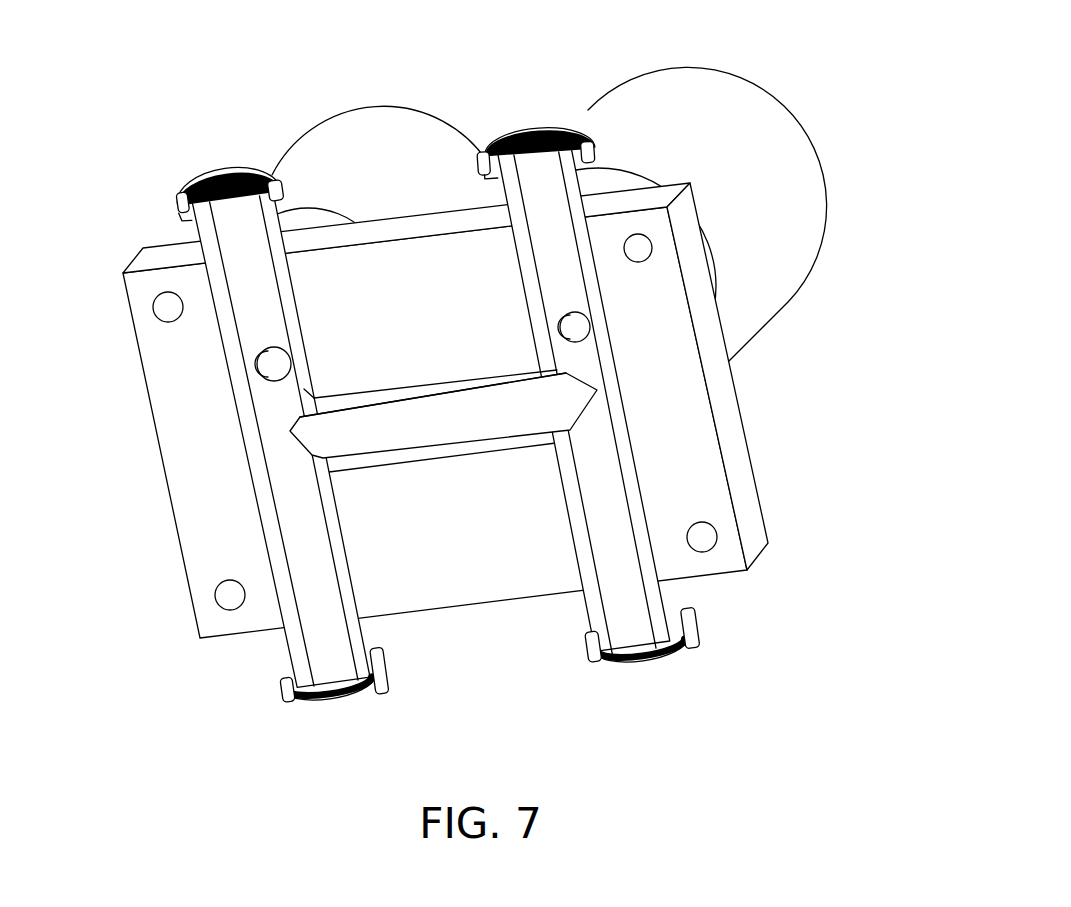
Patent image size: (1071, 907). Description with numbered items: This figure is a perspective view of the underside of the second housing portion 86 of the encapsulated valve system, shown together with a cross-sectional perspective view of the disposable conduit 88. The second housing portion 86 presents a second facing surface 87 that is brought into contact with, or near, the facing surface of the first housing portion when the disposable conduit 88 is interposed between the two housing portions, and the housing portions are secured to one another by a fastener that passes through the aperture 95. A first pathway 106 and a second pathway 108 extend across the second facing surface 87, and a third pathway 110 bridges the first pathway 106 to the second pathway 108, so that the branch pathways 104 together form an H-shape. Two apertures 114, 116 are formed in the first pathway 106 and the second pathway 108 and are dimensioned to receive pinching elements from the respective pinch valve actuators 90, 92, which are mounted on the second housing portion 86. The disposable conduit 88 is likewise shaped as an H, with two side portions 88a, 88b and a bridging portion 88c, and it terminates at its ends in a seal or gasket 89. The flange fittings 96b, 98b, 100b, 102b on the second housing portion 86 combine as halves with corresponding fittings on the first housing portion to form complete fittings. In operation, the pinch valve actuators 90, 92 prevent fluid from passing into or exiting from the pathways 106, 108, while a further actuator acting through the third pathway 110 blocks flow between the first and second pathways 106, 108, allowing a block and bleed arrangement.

The second housing portion 86 is at (469, 410).
The second facing surface 87 is at (700, 432).
The disposable conduit 88 is at (461, 418).
The side portion 88a is at (641, 402).
The side portion 88b is at (254, 439).
The bridging portion 88c is at (442, 452).
The seal or gasket 89 is at (176, 186).
The pinch valve actuator 90 is at (412, 107).
The pinch valve actuator 92 is at (722, 80).
The aperture 95 is at (154, 308).
The flange fitting 96b is at (280, 690).
The flange fitting 98b is at (700, 630).
The flange fitting 100b is at (174, 208).
The flange fitting 102b is at (598, 148).
The branch passageways 104 is at (318, 384).
The first pathway 106 is at (303, 356).
The second pathway 108 is at (517, 267).
The third pathway 110 is at (470, 377).
The aperture 114 is at (257, 363).
The aperture 116 is at (592, 332).